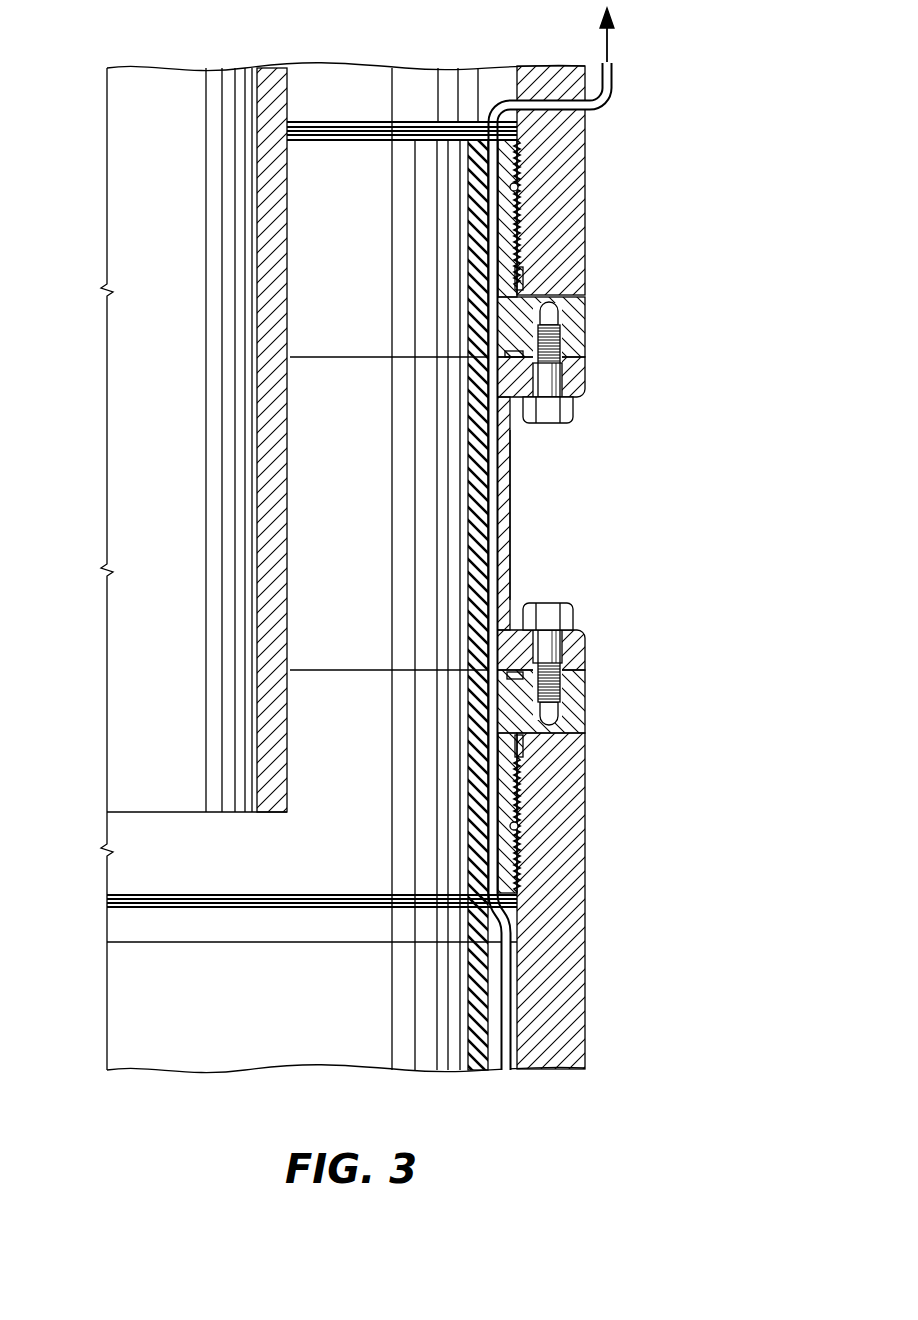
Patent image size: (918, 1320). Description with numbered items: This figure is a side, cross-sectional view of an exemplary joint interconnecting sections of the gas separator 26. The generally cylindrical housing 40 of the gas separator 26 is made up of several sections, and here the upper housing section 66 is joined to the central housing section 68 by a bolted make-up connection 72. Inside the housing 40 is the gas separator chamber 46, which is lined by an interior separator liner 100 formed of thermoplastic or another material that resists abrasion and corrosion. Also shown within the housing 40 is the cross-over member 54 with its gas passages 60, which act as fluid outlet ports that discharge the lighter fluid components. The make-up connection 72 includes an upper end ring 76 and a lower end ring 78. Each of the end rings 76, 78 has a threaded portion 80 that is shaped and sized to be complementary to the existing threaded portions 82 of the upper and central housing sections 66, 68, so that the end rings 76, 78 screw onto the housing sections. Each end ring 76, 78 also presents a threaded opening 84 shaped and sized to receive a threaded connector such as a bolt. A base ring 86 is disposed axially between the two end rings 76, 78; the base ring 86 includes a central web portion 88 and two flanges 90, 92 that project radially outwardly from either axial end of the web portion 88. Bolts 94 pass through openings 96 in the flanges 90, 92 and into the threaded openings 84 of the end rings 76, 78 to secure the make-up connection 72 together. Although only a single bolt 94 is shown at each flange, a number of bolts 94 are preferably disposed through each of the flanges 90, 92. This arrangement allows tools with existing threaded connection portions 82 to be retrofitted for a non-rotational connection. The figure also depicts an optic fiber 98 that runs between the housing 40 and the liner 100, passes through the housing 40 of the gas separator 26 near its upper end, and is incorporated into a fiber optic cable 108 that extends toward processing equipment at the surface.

The gas separator 26 is at (680, 170).
The housing 40 is at (610, 520).
The gas separator chamber 46 is at (327, 1017).
The cross-over member 54 is at (285, 435).
The gas passages 60 is at (252, 508).
The upper housing section 66 is at (567, 148).
The central housing section 68 is at (570, 868).
The bolted make-up connection 72 is at (608, 495).
The upper end ring 76 is at (575, 315).
The lower end ring 78 is at (575, 713).
The threaded portion 80 is at (520, 228).
The threaded portions 82 is at (520, 190).
The threaded opening 84 is at (562, 338).
The base ring 86 is at (514, 546).
The central web portion 88 is at (510, 470).
The flange 90 is at (585, 372).
The flange 92 is at (575, 657).
The bolts 94 is at (568, 412).
The openings 96 is at (565, 388).
The optic fibers 98 is at (489, 110).
The interior separator liner 100 is at (472, 1042).
The fiber optic cable 108 is at (609, 45).